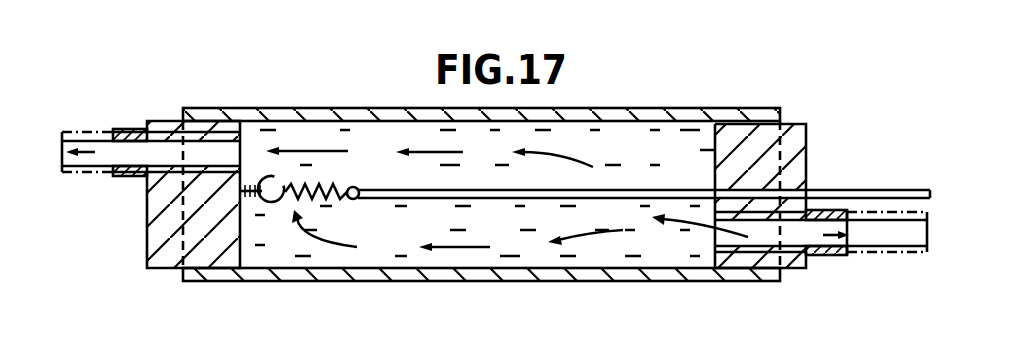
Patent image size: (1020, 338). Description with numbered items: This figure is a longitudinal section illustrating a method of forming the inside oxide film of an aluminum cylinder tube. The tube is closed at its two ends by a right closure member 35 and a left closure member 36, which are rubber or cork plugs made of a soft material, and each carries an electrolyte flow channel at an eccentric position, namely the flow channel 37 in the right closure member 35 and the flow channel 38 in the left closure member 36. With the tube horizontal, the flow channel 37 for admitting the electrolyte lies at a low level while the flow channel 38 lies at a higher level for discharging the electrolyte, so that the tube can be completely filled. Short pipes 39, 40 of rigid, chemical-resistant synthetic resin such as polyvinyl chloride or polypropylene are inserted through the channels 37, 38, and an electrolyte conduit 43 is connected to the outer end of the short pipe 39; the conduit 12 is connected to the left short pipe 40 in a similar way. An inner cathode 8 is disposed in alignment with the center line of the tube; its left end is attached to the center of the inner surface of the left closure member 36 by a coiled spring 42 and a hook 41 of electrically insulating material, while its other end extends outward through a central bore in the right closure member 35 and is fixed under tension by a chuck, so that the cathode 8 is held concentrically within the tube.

The inner cathode 8 is at (645, 193).
The inlet tube 12 is at (103, 131).
The right closure member 35 is at (792, 270).
The left closure member 36 is at (167, 121).
The electrolyte flow channel 37 is at (750, 235).
The electrolyte flow channel 38 is at (250, 123).
The short pipe 39 is at (810, 254).
The short pipe 40 is at (141, 128).
The hook 41 is at (271, 203).
The coiled spring 42 is at (322, 185).
The electrolyte conduit 43 is at (866, 258).